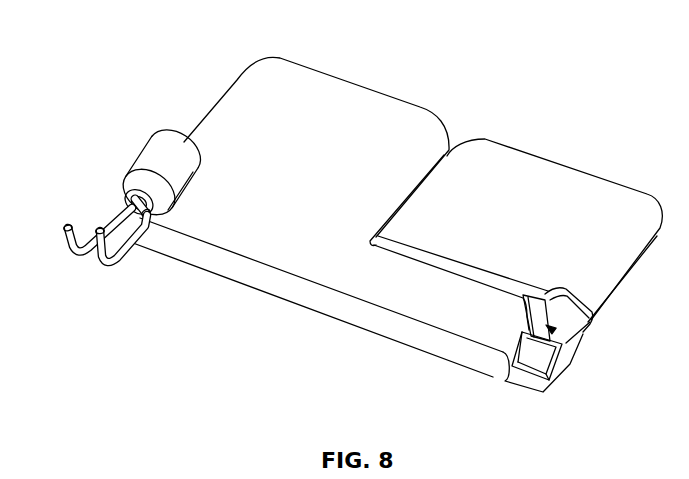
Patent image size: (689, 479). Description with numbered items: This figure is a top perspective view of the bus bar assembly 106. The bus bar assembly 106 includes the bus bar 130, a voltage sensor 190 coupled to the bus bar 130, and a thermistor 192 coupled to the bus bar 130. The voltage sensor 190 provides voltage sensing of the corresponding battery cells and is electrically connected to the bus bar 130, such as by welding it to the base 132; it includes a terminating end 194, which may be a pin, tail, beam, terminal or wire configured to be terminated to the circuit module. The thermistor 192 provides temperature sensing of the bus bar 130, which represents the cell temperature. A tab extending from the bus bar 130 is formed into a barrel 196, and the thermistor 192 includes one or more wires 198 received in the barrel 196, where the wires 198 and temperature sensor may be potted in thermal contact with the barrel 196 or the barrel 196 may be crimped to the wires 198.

The bus bar assembly 106 is at (492, 99).
The bus bar 130 is at (319, 320).
The base 132 is at (548, 370).
The voltage sensor 190 is at (553, 331).
The thermistor 192 is at (112, 200).
The terminating end 194 is at (560, 290).
The barrel 196 is at (160, 163).
The wires 198 is at (90, 238).